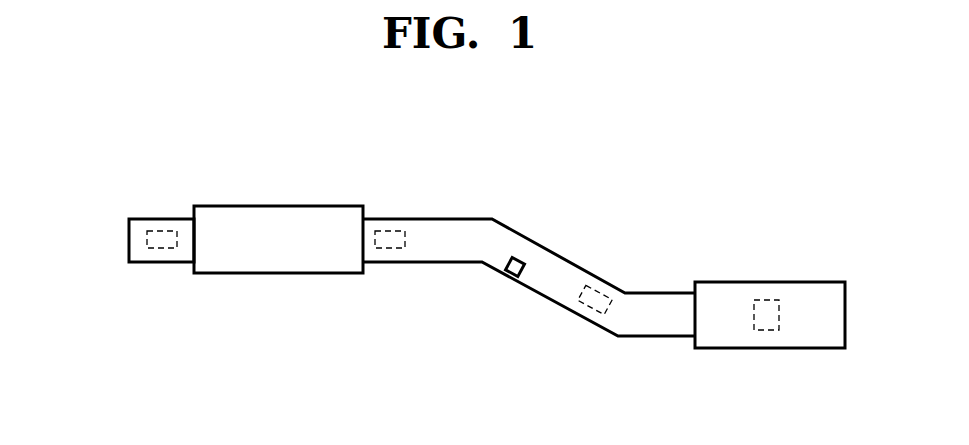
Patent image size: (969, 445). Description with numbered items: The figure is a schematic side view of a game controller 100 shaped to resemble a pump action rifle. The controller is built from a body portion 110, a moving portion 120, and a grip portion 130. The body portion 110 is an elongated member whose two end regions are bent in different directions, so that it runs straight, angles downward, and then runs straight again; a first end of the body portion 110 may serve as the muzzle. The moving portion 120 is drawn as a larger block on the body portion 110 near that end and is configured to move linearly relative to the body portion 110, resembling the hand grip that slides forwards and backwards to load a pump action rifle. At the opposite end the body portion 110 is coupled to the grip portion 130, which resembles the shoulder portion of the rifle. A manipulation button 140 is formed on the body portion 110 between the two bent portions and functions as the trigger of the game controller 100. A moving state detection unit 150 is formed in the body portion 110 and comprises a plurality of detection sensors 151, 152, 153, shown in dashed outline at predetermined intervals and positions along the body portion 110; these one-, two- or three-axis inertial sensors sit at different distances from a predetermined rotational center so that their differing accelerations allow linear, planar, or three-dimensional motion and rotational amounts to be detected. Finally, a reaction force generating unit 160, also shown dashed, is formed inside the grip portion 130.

The game controller 100 is at (688, 163).
The body portion 110 is at (474, 223).
The moving portion 120 is at (270, 220).
The grip portion 130 is at (775, 348).
The manipulation button 140 is at (510, 276).
The moving state detection unit 150 is at (128, 165).
The detection sensor 151 is at (161, 231).
The detection sensor 152 is at (389, 231).
The detection sensor 153 is at (602, 287).
The reaction force generating unit 160 is at (767, 300).